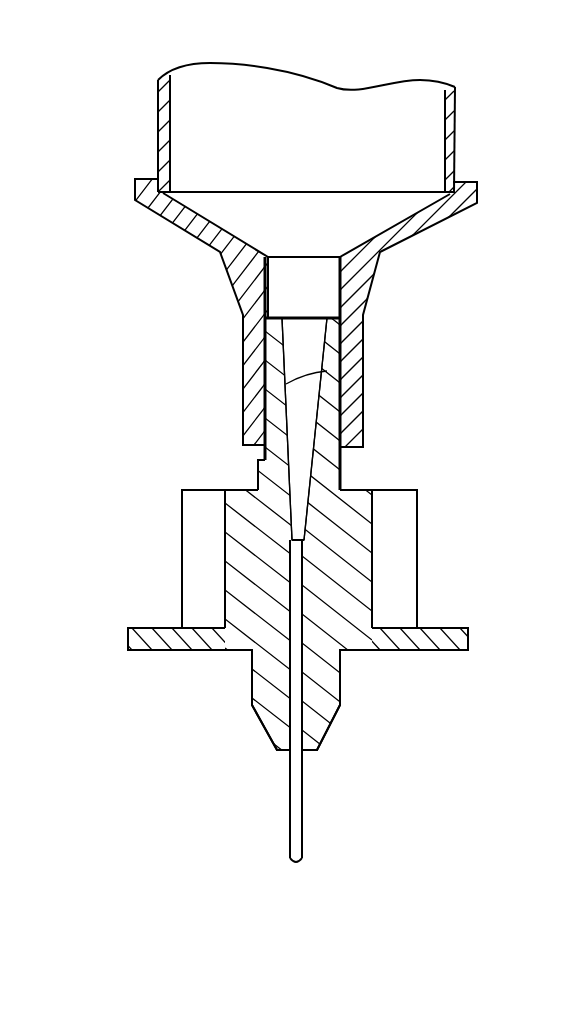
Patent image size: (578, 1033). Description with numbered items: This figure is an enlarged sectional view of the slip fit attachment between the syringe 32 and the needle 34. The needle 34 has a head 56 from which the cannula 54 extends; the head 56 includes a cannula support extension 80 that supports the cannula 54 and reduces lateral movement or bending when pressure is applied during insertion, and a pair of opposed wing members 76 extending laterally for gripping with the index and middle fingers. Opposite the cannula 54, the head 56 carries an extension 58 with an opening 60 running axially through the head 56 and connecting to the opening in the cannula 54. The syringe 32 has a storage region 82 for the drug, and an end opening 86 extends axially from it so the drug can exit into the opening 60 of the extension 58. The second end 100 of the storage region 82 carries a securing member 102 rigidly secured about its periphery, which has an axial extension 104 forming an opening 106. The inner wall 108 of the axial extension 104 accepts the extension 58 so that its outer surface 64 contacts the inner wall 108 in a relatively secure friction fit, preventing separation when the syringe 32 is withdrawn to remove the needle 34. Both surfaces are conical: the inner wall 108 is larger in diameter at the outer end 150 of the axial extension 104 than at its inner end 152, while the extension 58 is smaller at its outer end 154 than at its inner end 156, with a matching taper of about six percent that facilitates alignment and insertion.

The syringe 32 is at (120, 122).
The needle 34 is at (400, 735).
The cannula 54 is at (302, 798).
The head 56 is at (418, 546).
The extension 58 is at (343, 473).
The opening 60 is at (299, 400).
The outer surface 64 is at (258, 460).
The wing members 76 is at (147, 640).
The cannula support extension 80 is at (265, 708).
The storage region 82 is at (458, 124).
The end opening 86 is at (320, 273).
The second end 100 is at (455, 181).
The securing member 102 is at (443, 219).
The axial extension 104 is at (350, 365).
The opening 106 is at (298, 355).
The inner wall 108 is at (264, 383).
The outer end 150 is at (238, 414).
The inner end 152 is at (245, 322).
The outer end 154 is at (327, 338).
The inner end 156 is at (327, 452).